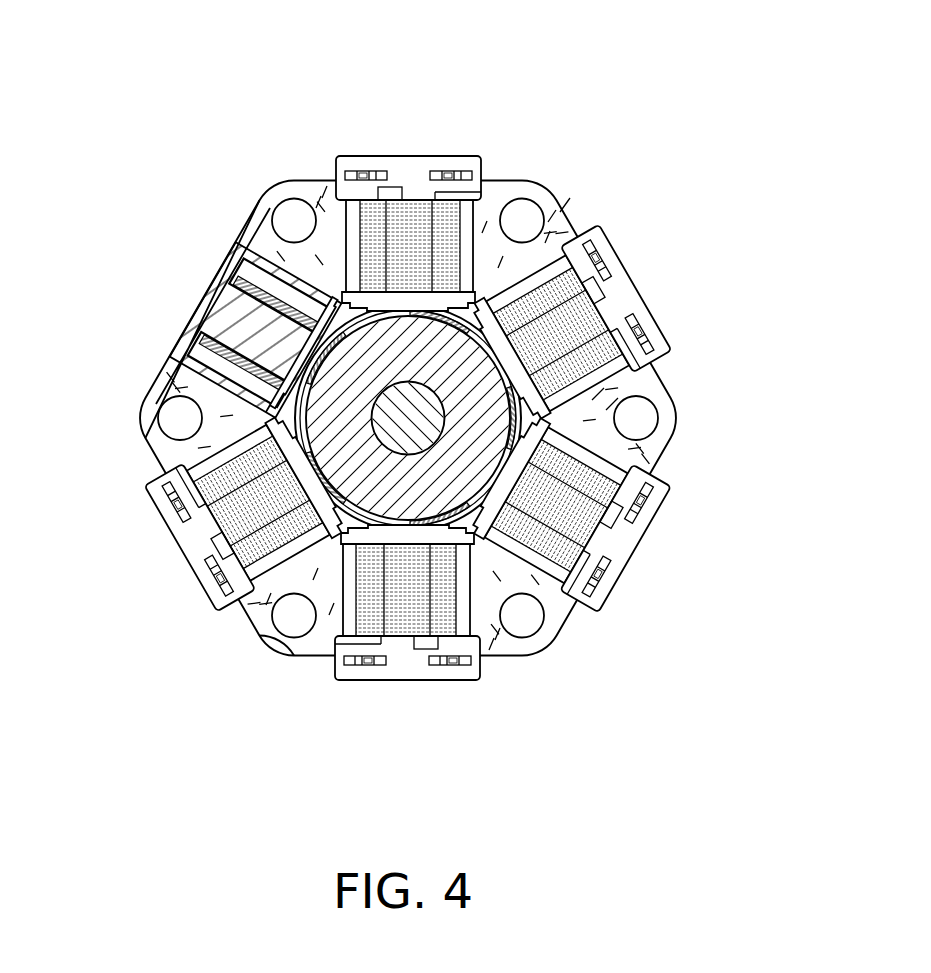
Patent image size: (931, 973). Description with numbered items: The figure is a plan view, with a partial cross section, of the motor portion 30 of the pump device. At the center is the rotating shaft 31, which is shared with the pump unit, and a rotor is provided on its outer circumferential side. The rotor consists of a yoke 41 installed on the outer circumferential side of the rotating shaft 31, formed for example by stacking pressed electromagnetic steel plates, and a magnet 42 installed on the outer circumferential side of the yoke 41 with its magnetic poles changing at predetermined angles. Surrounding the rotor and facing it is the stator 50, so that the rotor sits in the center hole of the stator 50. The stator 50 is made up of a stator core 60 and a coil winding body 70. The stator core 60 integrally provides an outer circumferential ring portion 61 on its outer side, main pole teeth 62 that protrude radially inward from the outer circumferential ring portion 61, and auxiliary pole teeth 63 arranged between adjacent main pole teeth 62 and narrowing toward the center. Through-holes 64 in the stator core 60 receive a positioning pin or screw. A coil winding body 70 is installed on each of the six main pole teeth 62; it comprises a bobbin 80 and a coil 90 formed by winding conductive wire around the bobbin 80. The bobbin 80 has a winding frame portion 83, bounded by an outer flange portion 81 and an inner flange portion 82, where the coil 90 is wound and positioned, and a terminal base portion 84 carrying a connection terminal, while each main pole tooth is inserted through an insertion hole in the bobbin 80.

The motor portion 30 is at (290, 163).
The rotating shaft 31 is at (252, 600).
The yoke 41 is at (468, 305).
The magnet 42 is at (493, 560).
The stator 50 is at (568, 203).
The stator core 60 is at (280, 643).
The outer circumferential ring portion 61 is at (407, 333).
The main pole teeth 62 is at (393, 426).
The auxiliary pole teeth 63 is at (600, 395).
The through-holes 64 is at (642, 425).
The coil winding body 70 is at (437, 128).
The bobbin 80 is at (194, 321).
The outer flange portion 81 is at (232, 268).
The inner flange portion 82 is at (447, 312).
The winding frame portion 83 is at (185, 395).
The terminal base portion 84 is at (405, 156).
The coil 90 is at (200, 370).